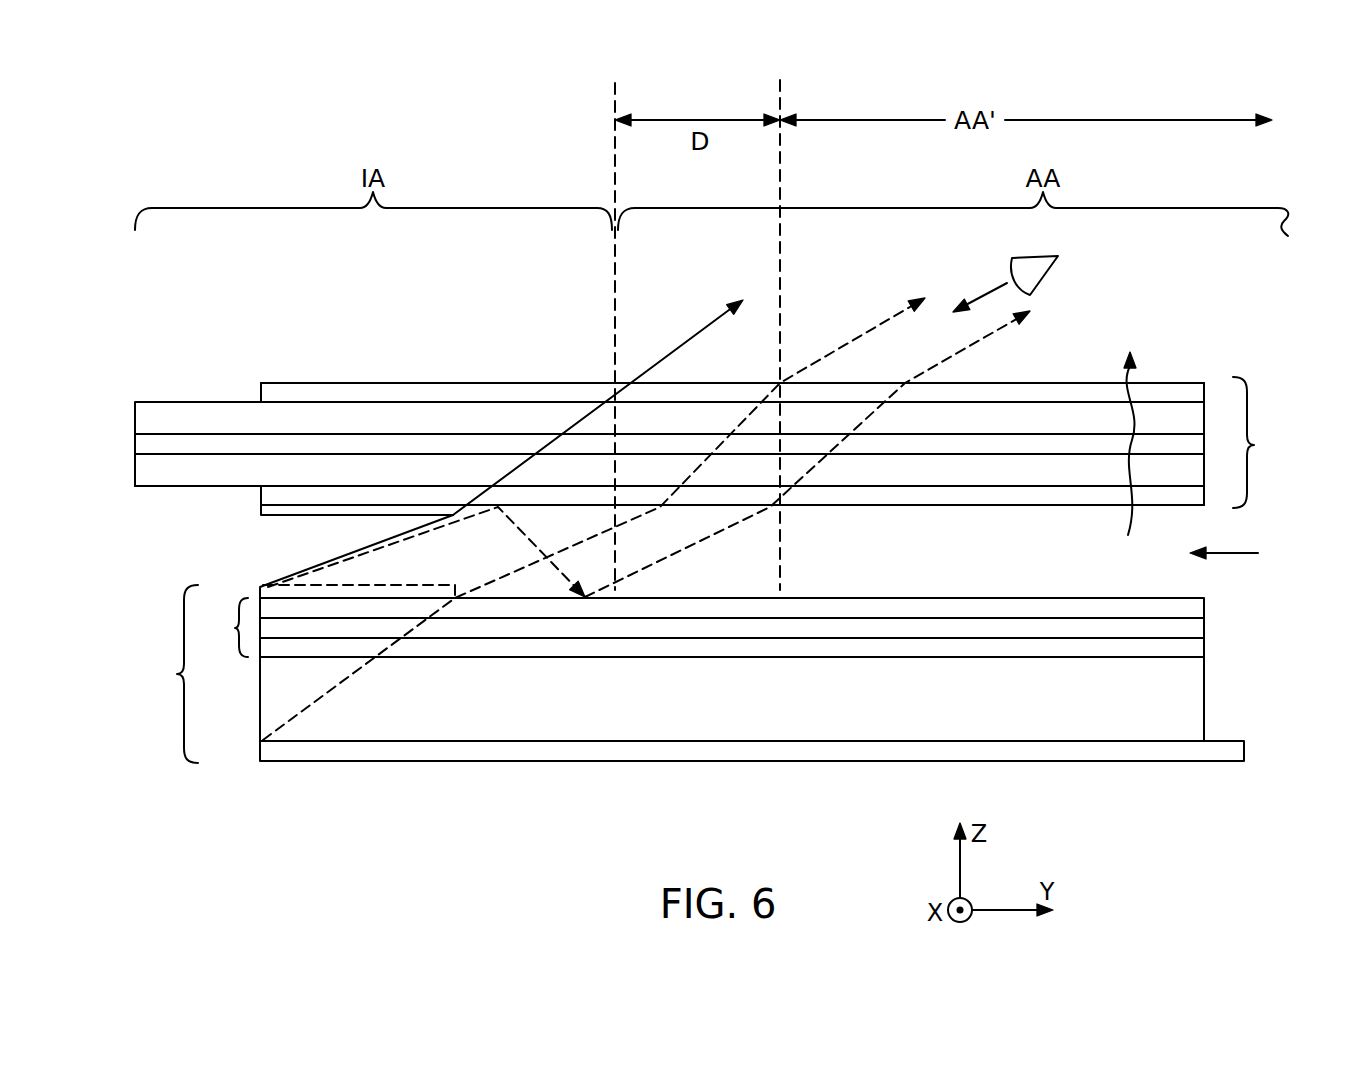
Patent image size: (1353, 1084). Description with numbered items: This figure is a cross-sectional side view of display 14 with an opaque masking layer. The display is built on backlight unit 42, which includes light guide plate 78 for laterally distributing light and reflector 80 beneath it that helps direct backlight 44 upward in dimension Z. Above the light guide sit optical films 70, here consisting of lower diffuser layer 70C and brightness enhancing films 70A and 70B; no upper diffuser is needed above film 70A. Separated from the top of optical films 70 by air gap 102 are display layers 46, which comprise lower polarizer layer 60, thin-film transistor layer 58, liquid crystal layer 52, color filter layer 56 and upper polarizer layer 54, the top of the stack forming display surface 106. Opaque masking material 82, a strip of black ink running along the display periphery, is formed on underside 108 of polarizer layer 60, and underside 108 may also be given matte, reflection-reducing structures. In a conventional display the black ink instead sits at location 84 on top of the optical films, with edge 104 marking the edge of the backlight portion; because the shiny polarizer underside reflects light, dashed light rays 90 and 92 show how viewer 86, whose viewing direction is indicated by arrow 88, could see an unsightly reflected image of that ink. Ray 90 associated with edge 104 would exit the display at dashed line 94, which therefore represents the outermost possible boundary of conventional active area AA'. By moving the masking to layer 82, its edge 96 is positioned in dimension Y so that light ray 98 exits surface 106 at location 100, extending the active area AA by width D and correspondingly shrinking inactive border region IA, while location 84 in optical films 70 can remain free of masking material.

The display 14 is at (222, 160).
The location 100 is at (612, 92).
The dashed line 94 is at (783, 178).
The light ray 98 is at (683, 335).
The backlight light ray 90 is at (855, 338).
The dashed line 92 is at (942, 363).
The viewing direction 88 is at (978, 297).
The viewer 86 is at (1050, 268).
The backlight 44 is at (1130, 373).
The display layers 46 is at (687, 440).
The liquid crystal layer 52 is at (162, 442).
The color filter layer 56 is at (194, 412).
The upper polarizer layer 54 is at (312, 386).
The surface 106 is at (414, 382).
The edge 96 is at (452, 513).
The thin-film transistor layer 58 is at (140, 468).
The opaque masking material 82 is at (270, 518).
The location 84 is at (380, 587).
The edge 104 is at (462, 558).
The underside 108 is at (893, 508).
The lower polarizer layer 60 is at (976, 490).
The air gap 102 is at (1249, 553).
The brightness enhancing film 70A is at (1198, 608).
The brightness enhancing film 70B is at (1198, 630).
The lower diffuser layer 70C is at (1198, 649).
The light guide plate 78 is at (1198, 708).
The reflector 80 is at (1186, 750).
The backlight unit 42 is at (713, 699).
The optical films 70 is at (744, 623).